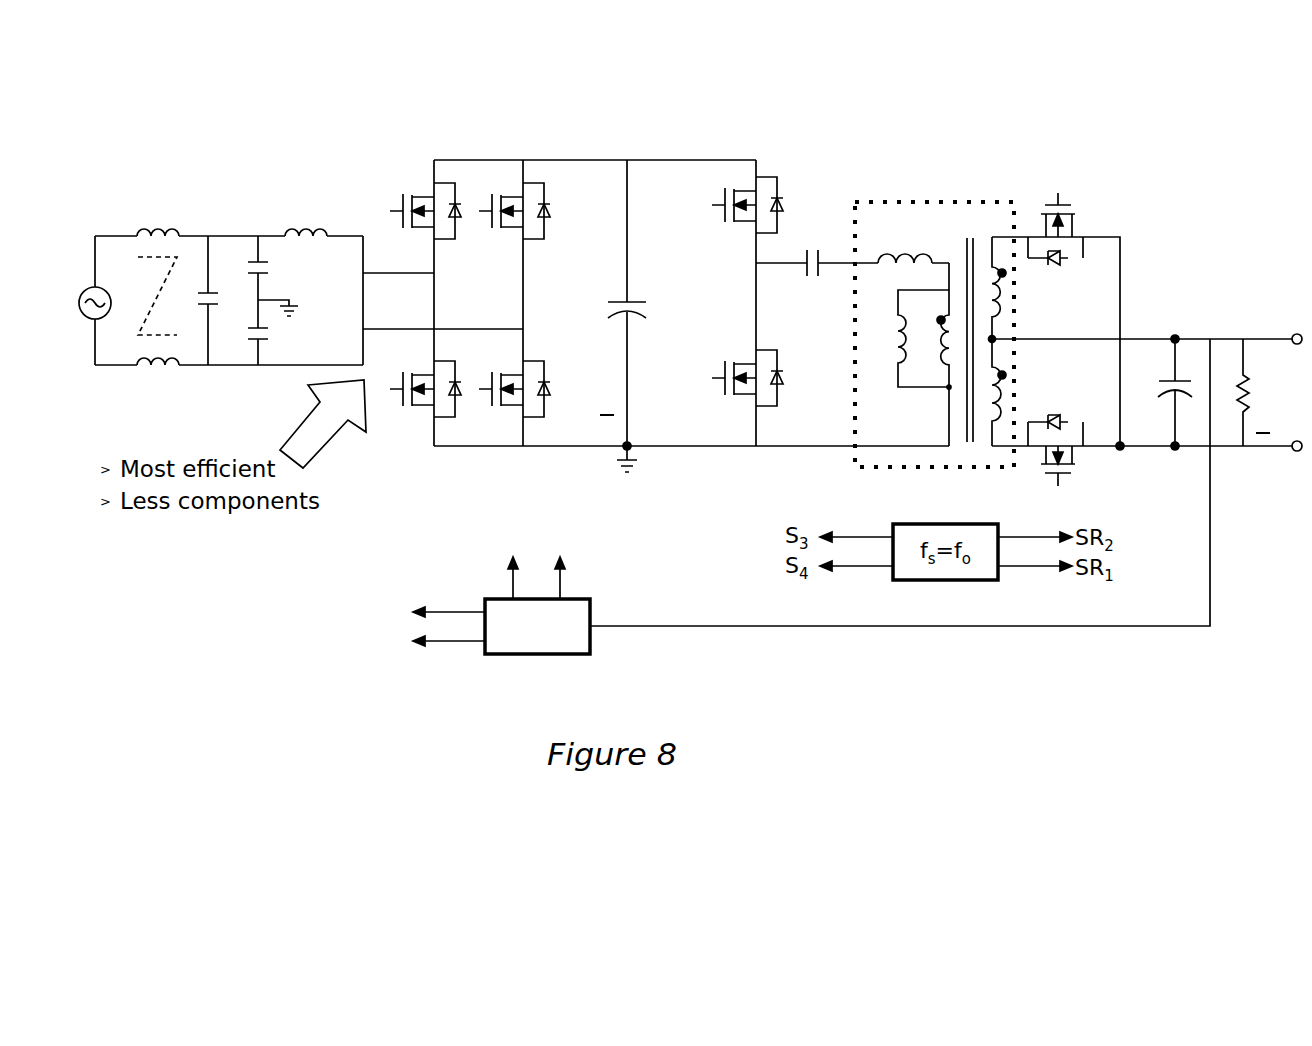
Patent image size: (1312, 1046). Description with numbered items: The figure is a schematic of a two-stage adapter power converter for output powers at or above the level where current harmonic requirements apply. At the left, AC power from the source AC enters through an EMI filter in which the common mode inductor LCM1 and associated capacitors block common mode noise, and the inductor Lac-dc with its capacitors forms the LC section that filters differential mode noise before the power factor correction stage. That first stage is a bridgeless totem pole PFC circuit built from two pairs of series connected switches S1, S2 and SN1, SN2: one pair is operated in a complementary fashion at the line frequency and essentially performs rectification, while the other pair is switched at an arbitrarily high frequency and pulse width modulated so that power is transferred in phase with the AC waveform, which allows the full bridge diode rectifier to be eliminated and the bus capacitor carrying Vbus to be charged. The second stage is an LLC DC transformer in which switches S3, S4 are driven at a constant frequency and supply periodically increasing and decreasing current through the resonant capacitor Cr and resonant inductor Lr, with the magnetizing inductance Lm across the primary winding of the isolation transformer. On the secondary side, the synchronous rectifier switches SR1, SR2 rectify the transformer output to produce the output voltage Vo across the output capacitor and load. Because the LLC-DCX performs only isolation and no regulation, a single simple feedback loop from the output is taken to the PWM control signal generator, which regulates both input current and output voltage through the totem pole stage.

The AC input AC is at (74, 300).
The common mode inductor LCM1 is at (151, 279).
The AC-DC boost inductor Lac-dc is at (320, 214).
The switch S1 is at (419, 204).
The switch S2 is at (422, 398).
The switch SN1 is at (507, 204).
The switch SN2 is at (507, 399).
The DC bus capacitor / bus voltage Vbus is at (603, 316).
The switch S3 is at (739, 205).
The switch S4 is at (739, 378).
The resonant capacitor Cr is at (817, 253).
The resonant inductor Lr is at (913, 246).
The magnetizing inductor Lm is at (907, 338).
The synchronous rectifier switch SR1 is at (1075, 229).
The synchronous rectifier switch SR2 is at (1085, 450).
The output voltage / load Vo is at (1211, 392).
The PWM controller PWM is at (484, 591).